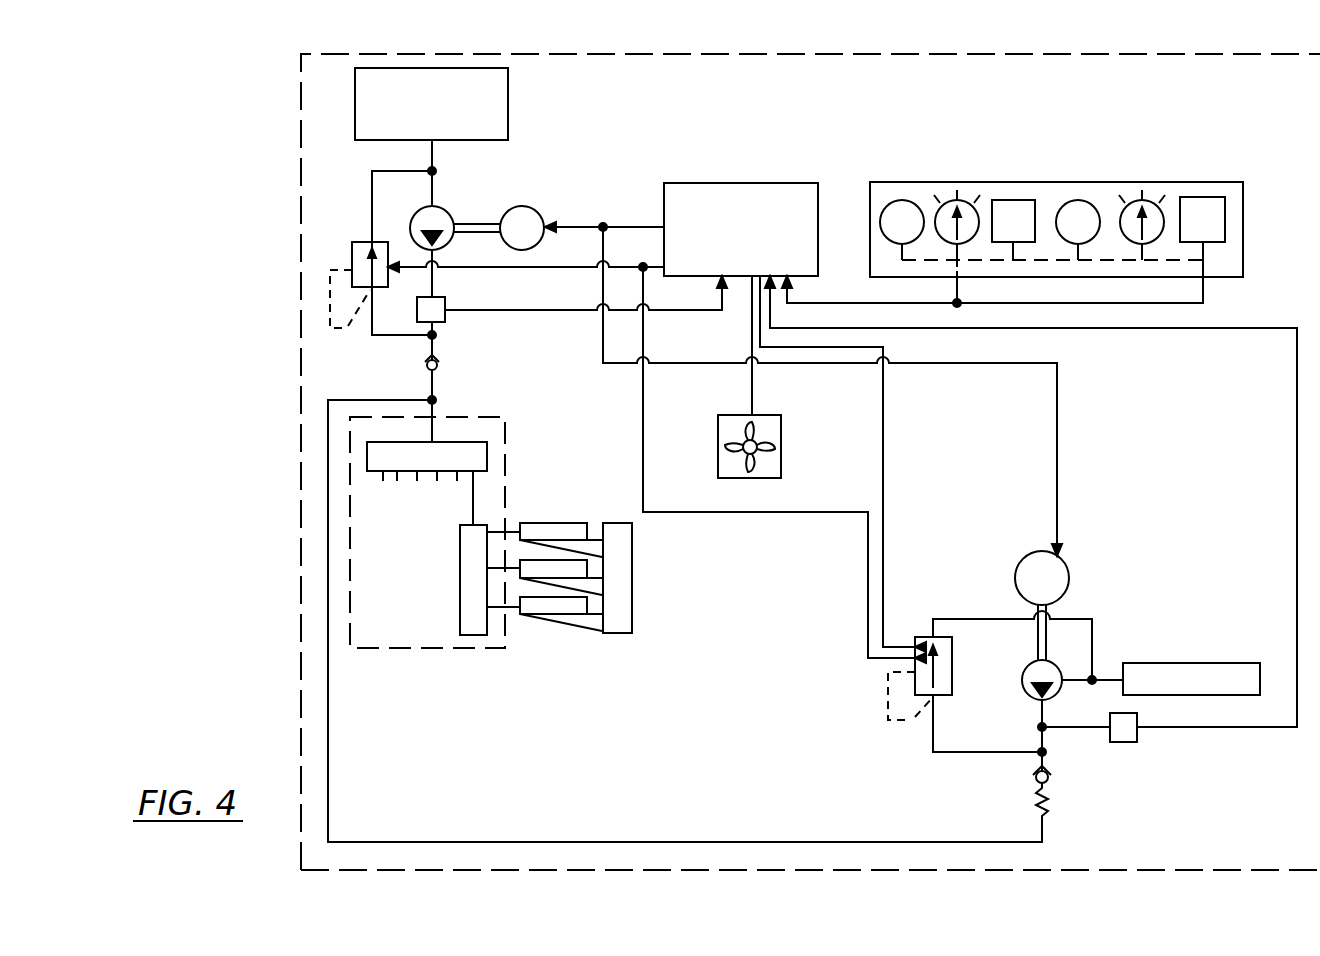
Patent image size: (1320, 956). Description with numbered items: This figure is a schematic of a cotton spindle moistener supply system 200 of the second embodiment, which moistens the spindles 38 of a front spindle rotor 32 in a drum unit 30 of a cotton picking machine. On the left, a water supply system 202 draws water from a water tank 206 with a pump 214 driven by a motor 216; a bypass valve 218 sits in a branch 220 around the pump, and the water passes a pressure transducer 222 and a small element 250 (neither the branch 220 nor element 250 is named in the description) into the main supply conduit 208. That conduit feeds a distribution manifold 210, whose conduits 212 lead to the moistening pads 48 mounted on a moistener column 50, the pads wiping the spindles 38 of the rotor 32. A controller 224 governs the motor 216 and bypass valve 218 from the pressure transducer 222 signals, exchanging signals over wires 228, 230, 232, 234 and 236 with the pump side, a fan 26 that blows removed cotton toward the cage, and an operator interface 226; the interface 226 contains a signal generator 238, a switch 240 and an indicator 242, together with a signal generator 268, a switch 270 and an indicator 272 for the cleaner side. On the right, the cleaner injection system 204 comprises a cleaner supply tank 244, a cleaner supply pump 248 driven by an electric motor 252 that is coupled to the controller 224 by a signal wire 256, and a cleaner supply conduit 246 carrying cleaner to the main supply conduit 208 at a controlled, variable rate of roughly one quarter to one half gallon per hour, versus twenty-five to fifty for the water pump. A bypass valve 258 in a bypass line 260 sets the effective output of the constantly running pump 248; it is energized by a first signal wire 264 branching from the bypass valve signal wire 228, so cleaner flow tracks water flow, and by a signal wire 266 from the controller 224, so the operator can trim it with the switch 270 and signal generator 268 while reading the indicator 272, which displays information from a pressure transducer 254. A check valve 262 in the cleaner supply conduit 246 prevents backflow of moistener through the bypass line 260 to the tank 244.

The cotton spindle moistener supply system 200 is at (282, 68).
The water tank 206 is at (510, 90).
The water supply system 202 is at (499, 186).
The water supply pump 214 is at (444, 210).
The motor 216 is at (527, 205).
The bypass line 220 is at (377, 171).
The bypass valve 218 is at (360, 242).
The pressure transducer 222 is at (445, 298).
The check valve 250 is at (426, 368).
The main supply conduit 208 is at (430, 383).
The cleaner supply conduit 246 is at (761, 832).
The drum unit 30 is at (467, 561).
The distribution manifold 210 is at (488, 448).
The conduit 212 is at (476, 482).
The moistener column 50 is at (460, 568).
The moistening pads 48 is at (537, 523).
The spindles 38 is at (560, 541).
The front spindle rotor 32 is at (632, 583).
The controller 224 is at (724, 183).
The wire 230 is at (592, 222).
The water supply pump bypass valve signal wire 228 is at (532, 270).
The wire 232 is at (512, 318).
The signal wire 256 is at (1057, 472).
The first signal wire 264 is at (725, 514).
The signal wire 266 is at (883, 462).
The wire 234 is at (870, 303).
The pressure transducer 254 is at (1125, 742).
The wire 236 is at (753, 392).
The fan 26 is at (782, 447).
The operator interface 226 is at (1058, 212).
The signal generator 238 is at (890, 200).
The indicator 242 is at (962, 195).
The switch 240 is at (1017, 200).
The signal generator 268 is at (1083, 200).
The indicator 272 is at (1147, 198).
The switch 270 is at (1213, 197).
The cleaner injection system 204 is at (1068, 627).
The electric motor 252 is at (1070, 580).
The cleaner supply pump 248 is at (1030, 697).
The bypass valve 258 is at (952, 650).
The bypass line 260 is at (965, 753).
The cleaner supply tank 244 is at (1252, 637).
The check valve 262 is at (1050, 780).